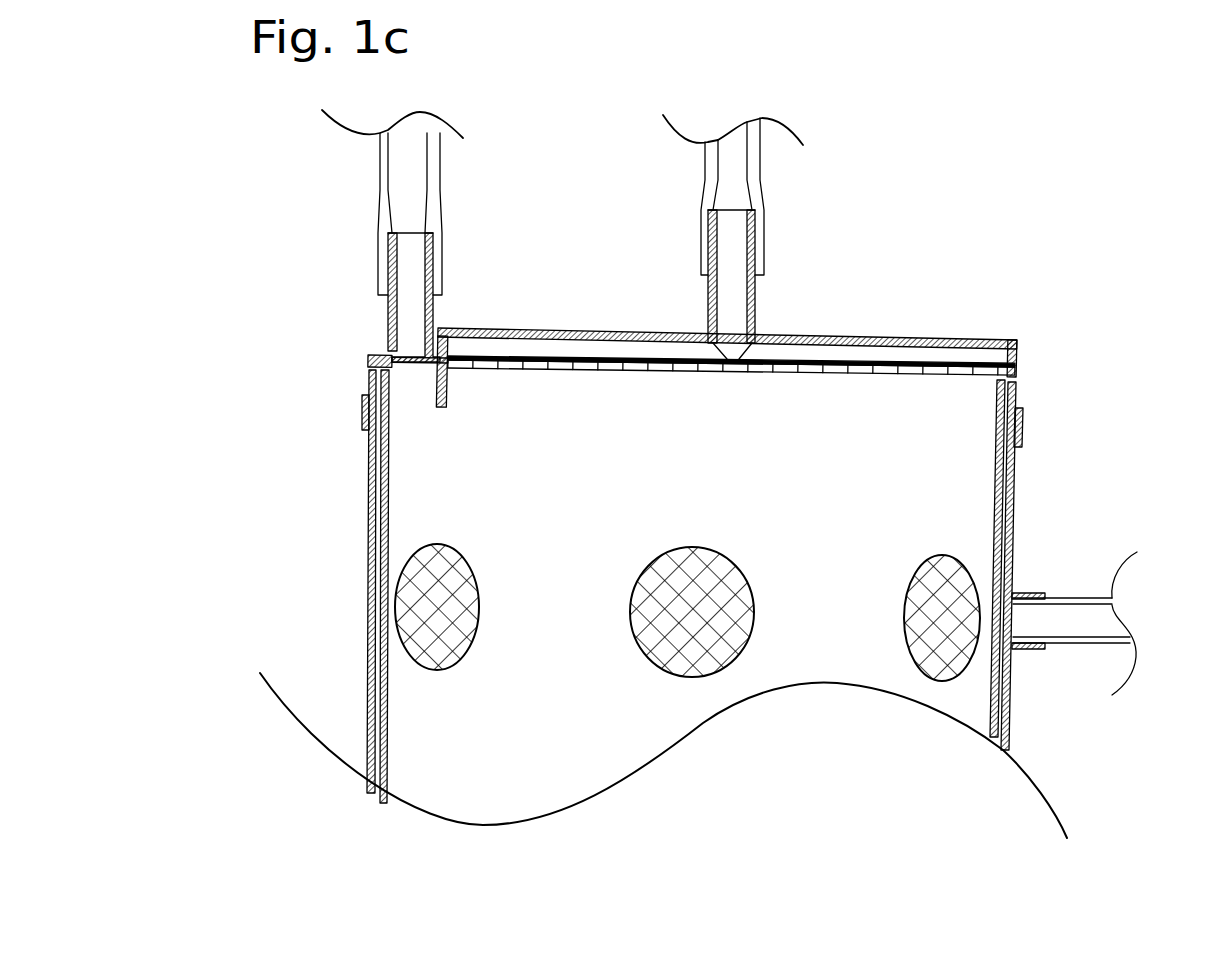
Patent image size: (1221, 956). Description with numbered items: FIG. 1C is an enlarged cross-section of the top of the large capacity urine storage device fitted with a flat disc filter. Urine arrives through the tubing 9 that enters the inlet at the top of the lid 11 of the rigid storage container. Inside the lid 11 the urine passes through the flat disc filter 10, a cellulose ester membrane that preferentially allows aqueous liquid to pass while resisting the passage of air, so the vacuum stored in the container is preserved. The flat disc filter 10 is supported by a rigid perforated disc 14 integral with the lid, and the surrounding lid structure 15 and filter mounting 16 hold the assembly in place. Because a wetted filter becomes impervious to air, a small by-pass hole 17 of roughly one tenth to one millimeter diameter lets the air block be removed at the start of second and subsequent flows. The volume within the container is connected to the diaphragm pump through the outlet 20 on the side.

The tube 9 is at (750, 253).
The flat disc filter 10 is at (925, 362).
The lid 11 is at (1015, 373).
The rigid perforated disc 14 is at (455, 354).
The top plate 15 is at (858, 338).
The opening 16 is at (767, 338).
The hole 17 is at (708, 336).
The outlet 20 is at (1037, 620).